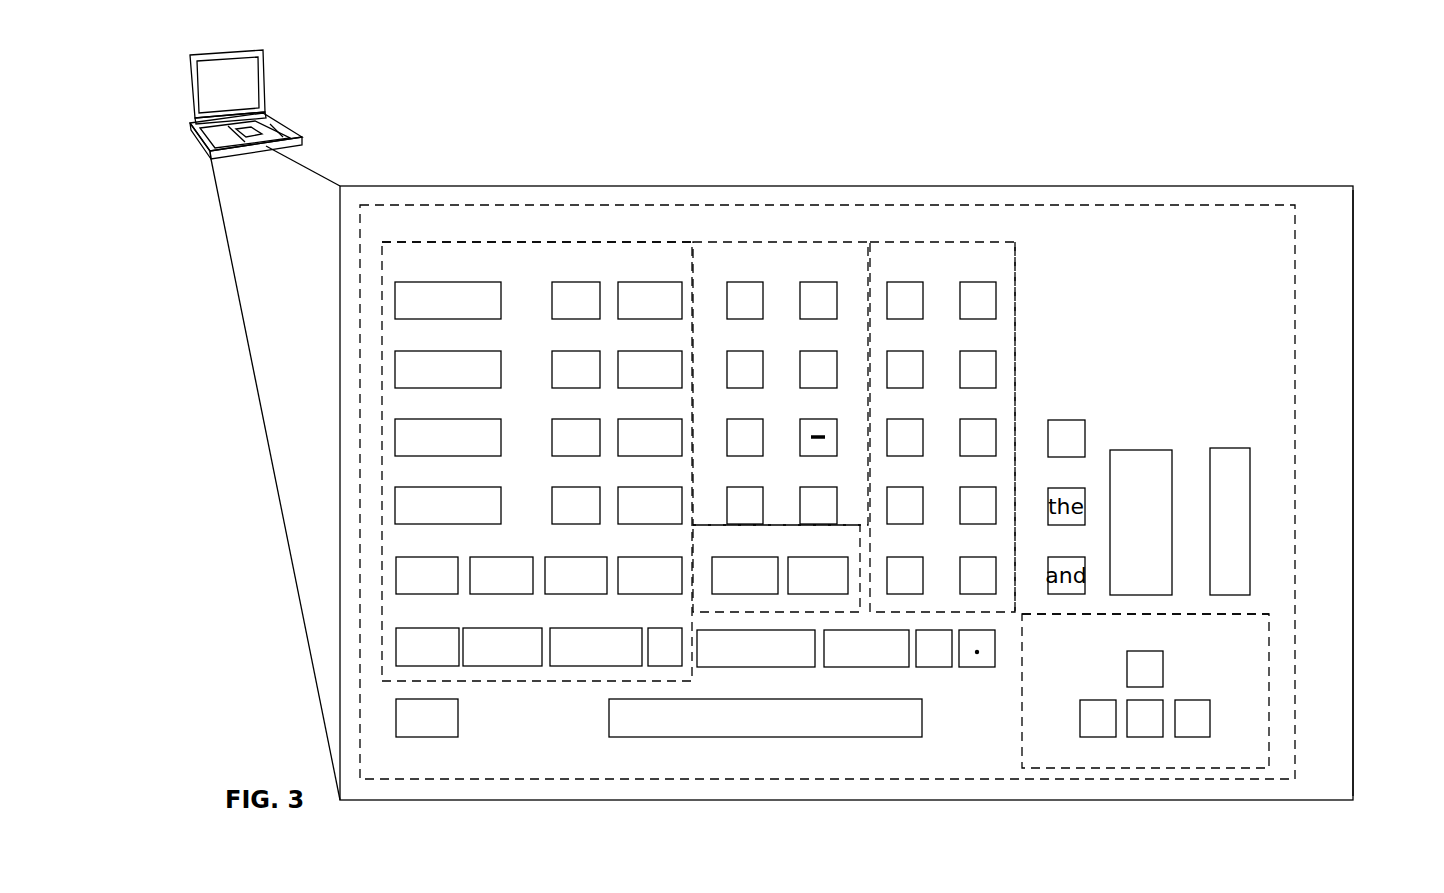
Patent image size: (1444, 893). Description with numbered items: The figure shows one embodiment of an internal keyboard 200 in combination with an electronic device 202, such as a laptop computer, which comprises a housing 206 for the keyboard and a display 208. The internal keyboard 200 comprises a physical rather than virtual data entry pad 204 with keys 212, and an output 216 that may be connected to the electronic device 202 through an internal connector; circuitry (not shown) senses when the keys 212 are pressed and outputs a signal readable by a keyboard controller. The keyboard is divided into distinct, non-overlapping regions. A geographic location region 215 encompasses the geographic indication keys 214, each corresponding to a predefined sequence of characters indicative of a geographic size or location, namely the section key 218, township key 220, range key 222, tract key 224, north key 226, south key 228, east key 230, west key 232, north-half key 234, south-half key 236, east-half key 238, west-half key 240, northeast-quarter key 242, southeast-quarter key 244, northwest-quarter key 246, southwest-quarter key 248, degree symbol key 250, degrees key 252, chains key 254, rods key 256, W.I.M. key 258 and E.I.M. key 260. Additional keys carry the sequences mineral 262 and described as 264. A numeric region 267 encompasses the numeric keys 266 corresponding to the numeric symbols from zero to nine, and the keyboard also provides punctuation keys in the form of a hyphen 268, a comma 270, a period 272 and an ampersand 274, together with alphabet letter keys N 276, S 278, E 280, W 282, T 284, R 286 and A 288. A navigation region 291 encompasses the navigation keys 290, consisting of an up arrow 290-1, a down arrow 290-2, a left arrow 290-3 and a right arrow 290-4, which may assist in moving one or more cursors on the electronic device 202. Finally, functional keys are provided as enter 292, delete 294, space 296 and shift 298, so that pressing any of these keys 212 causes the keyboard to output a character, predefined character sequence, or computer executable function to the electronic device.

The internal keyboard 200 is at (266, 121).
The electronic device 202 is at (188, 97).
The data entry pad 204 is at (390, 187).
The housing 206 is at (298, 141).
The display 208 is at (246, 95).
The keys 212 is at (748, 205).
The geographic indication keys 214 is at (509, 242).
The geographic location region 215 is at (440, 242).
The output 216 is at (1353, 288).
The section key 218 is at (439, 282).
The township key 220 is at (439, 351).
The range key 222 is at (439, 419).
The tract key 224 is at (439, 487).
The north key 226 is at (444, 557).
The south key 228 is at (515, 557).
The east key 230 is at (585, 557).
The west key 232 is at (650, 557).
The N/2 key 234 is at (578, 282).
The S/2 key 236 is at (578, 351).
The E/2 key 238 is at (578, 419).
The W/2 key 240 is at (578, 487).
The NE/4 key 242 is at (645, 282).
The SE/4 key 244 is at (645, 351).
The NW/4 key 246 is at (645, 419).
The SW/4 key 248 is at (645, 487).
The degree symbol key 250 is at (666, 628).
The degrees key 252 is at (595, 628).
The chains key 254 is at (510, 628).
The rods key 256 is at (444, 628).
The W.I.M. key 258 is at (752, 557).
The E.I.M. key 260 is at (800, 557).
The mineral key 262 is at (866, 668).
The described as key 264 is at (775, 668).
The numeric keys 266 is at (947, 241).
The numeric region 267 is at (1017, 272).
The hyphen key 268 is at (813, 419).
The comma key 270 is at (934, 668).
The period key 272 is at (978, 668).
The ampersand key 274 is at (813, 487).
The N key 276 is at (750, 282).
The S key 278 is at (750, 351).
The E key 280 is at (750, 419).
The W key 282 is at (750, 487).
The T key 284 is at (813, 282).
The R key 286 is at (813, 351).
The A key 288 is at (1068, 420).
The navigation keys 290 is at (1266, 614).
The up arrow key 290-1 is at (1145, 651).
The down arrow key 290-2 is at (1145, 738).
The left arrow key 290-3 is at (1102, 700).
The right arrow key 290-4 is at (1186, 700).
The navigation region 291 is at (1272, 648).
The enter key 292 is at (1130, 450).
The delete key 294 is at (1230, 448).
The space key 296 is at (663, 738).
The shift key 298 is at (437, 738).